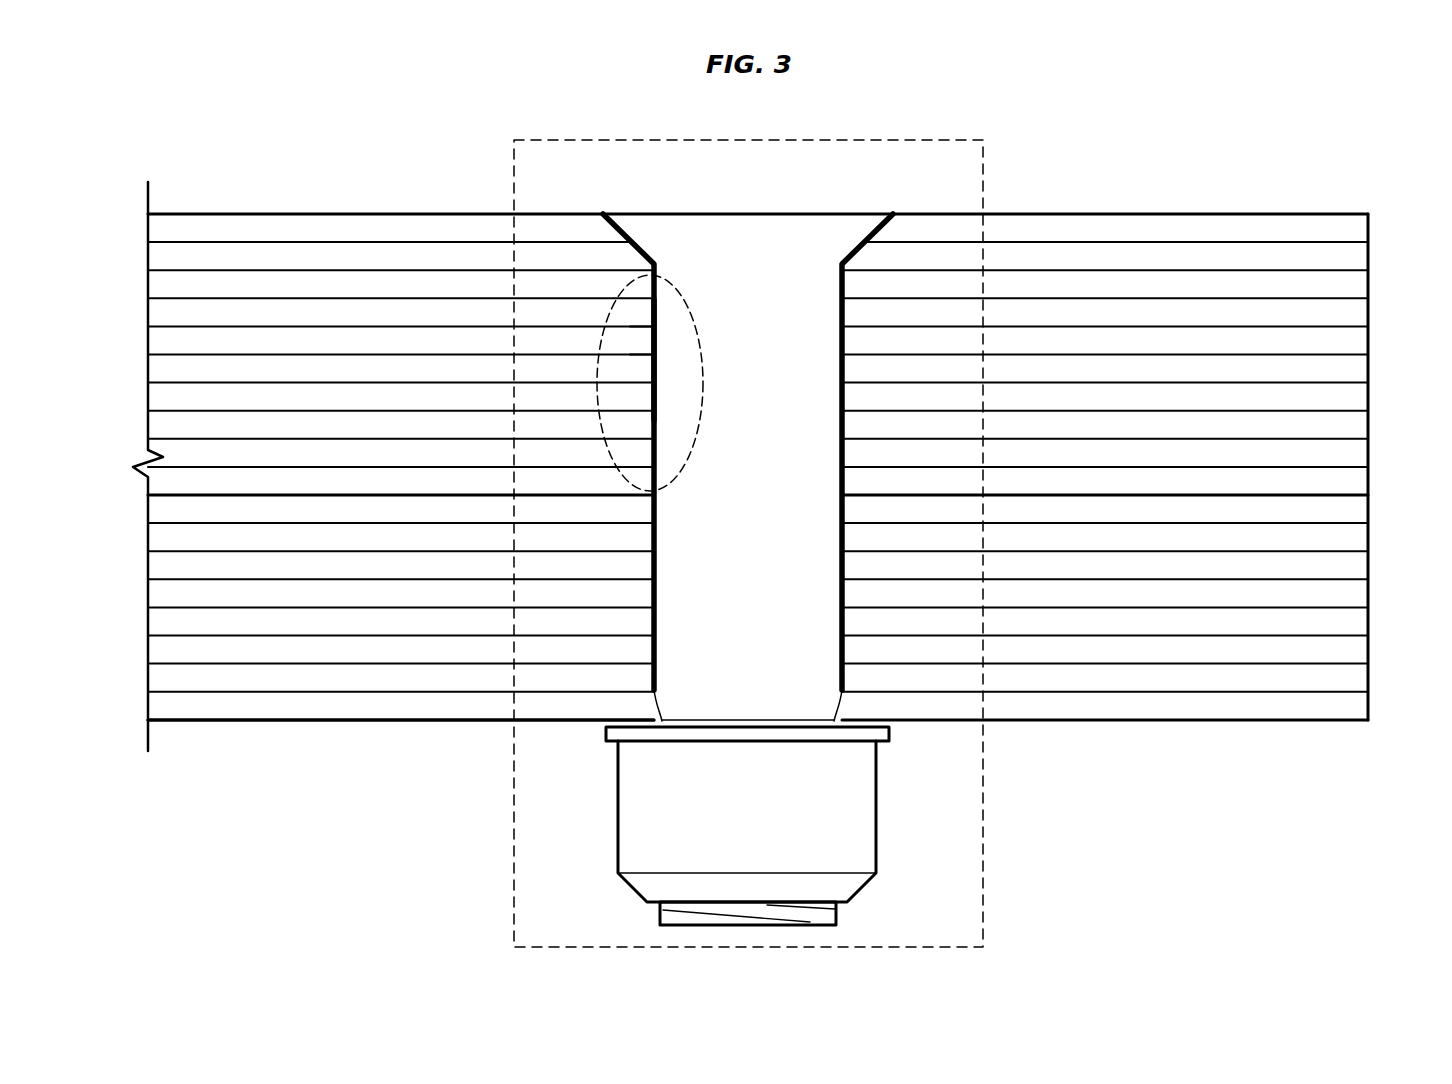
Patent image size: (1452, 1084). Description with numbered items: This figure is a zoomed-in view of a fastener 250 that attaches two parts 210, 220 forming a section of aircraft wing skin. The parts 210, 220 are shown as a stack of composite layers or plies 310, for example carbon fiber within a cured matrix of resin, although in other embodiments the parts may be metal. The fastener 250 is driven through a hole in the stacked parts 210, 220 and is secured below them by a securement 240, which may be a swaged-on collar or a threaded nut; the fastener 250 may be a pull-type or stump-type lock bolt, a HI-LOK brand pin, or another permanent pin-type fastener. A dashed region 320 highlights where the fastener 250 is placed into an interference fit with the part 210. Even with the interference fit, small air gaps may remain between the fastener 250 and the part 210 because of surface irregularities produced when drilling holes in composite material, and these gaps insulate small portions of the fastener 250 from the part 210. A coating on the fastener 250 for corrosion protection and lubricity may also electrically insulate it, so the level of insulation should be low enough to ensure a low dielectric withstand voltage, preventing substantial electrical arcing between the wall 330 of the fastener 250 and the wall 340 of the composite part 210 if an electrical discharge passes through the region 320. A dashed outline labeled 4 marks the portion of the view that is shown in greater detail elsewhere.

The detail region of FIG. 4 is at (512, 812).
The part 210 is at (347, 213).
The part 220 is at (248, 721).
The securement 240 is at (629, 793).
The fastener 250 is at (767, 227).
The layers/plies 310 is at (1353, 231).
The region 320 is at (702, 427).
The wall of fastener 330 is at (658, 357).
The wall of composite part 340 is at (652, 338).